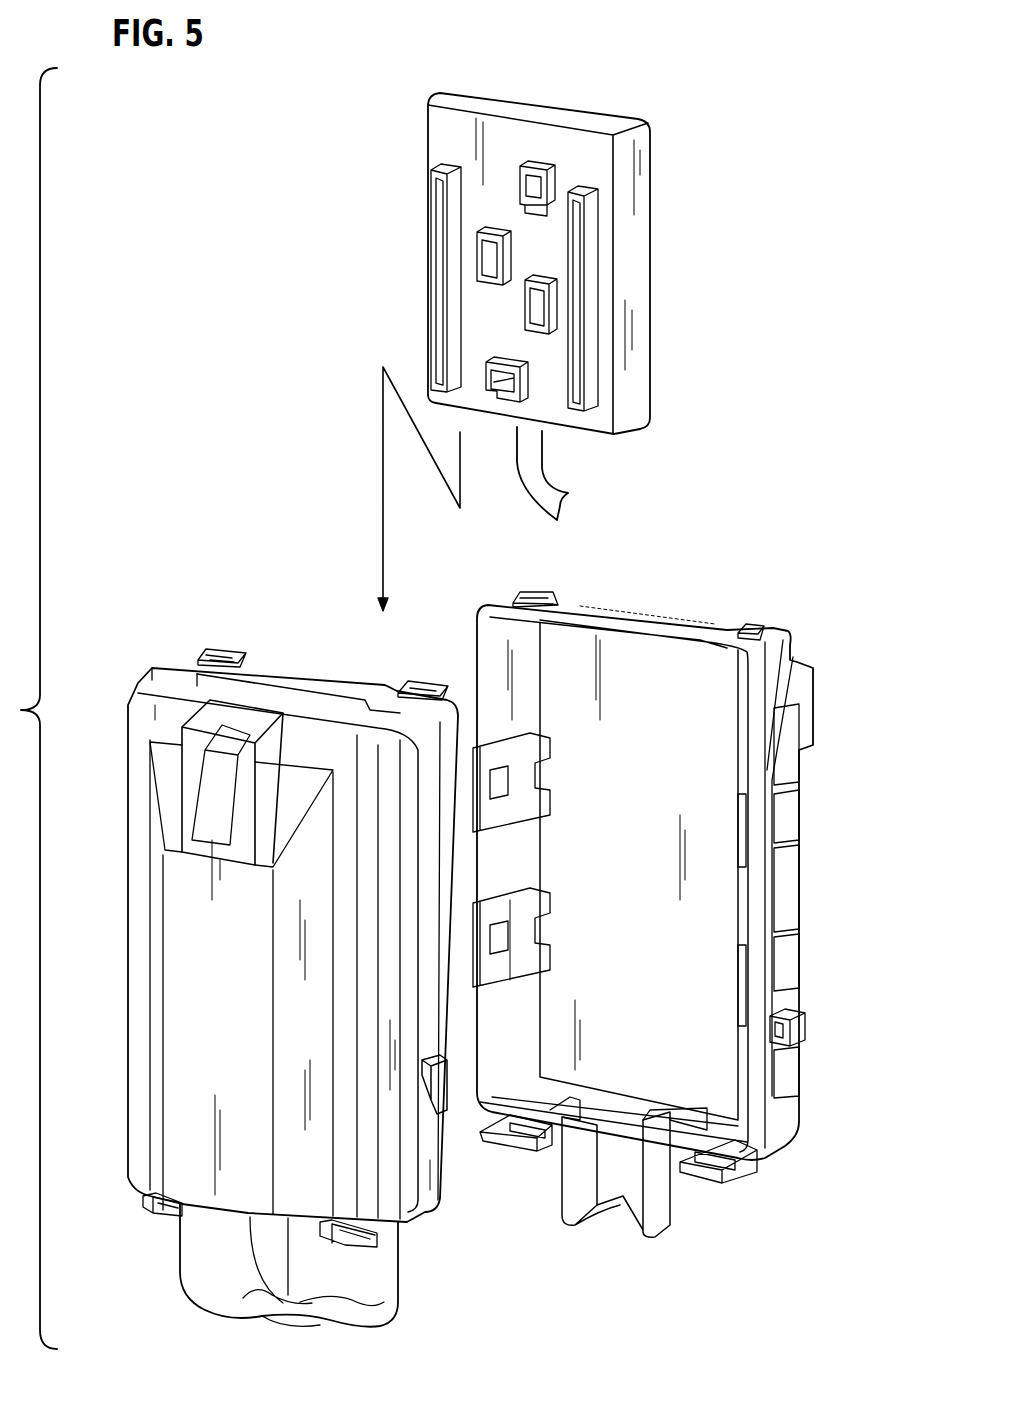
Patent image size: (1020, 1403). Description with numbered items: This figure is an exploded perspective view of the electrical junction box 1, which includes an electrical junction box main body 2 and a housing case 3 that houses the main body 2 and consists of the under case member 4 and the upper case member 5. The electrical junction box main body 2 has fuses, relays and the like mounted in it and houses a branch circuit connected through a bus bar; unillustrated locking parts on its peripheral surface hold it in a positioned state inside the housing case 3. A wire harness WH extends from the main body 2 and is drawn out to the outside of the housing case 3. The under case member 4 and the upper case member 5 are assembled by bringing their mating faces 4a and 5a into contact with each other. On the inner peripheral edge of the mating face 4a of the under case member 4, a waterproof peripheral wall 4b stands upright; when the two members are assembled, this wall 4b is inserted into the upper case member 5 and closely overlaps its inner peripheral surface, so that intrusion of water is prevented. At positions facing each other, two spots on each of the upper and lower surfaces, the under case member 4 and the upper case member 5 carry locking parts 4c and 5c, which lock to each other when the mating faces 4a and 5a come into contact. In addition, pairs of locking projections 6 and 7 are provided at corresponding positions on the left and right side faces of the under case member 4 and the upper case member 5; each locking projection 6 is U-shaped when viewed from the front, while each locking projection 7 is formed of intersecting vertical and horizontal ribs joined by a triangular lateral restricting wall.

The electrical junction box 1 is at (226, 286).
The electrical junction box main body 2 is at (640, 252).
The wire harness WH is at (545, 463).
The housing case 3 is at (152, 645).
The under case member 4 is at (787, 889).
The mating face 4a is at (755, 957).
The waterproof peripheral wall 4b is at (755, 820).
The locking parts 4c is at (547, 592).
The upper case member 5 is at (128, 930).
The mating face 5a is at (440, 932).
The locking parts 5c is at (210, 648).
The locking projections 6 is at (797, 1027).
The locking projections 7 is at (447, 1080).